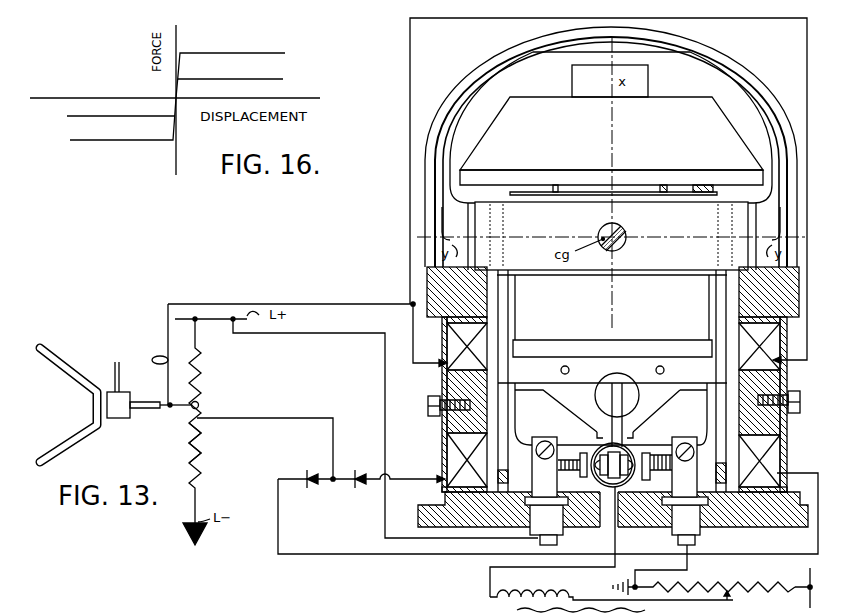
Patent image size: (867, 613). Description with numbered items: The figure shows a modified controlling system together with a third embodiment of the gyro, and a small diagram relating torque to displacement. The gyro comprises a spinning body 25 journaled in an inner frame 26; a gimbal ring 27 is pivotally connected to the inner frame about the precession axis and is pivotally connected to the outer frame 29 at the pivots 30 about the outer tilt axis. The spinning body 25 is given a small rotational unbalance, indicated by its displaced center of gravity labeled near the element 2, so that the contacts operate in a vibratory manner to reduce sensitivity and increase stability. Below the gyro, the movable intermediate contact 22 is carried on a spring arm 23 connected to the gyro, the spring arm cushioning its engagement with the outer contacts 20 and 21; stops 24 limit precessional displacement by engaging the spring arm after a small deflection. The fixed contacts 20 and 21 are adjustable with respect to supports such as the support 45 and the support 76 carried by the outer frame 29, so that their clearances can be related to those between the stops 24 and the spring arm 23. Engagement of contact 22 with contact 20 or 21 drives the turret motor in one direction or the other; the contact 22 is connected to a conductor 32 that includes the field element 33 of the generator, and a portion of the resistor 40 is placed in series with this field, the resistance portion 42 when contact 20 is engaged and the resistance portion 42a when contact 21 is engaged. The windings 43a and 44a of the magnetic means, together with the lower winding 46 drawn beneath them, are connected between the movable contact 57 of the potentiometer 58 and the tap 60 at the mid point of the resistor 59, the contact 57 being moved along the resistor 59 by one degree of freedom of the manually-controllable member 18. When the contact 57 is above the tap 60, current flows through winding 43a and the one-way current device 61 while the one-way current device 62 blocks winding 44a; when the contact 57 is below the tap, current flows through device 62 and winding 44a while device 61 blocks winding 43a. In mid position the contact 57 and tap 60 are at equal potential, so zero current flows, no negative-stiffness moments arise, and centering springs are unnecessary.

The manually-controllable member 18 is at (90, 440).
The movable contact 57 is at (198, 402).
The potentiometer 58 is at (235, 449).
The resistor 59 is at (192, 438).
The tap 60 is at (200, 418).
The one-way current device 61 is at (357, 472).
The one-way current device 62 is at (307, 472).
The outer frame 29 is at (462, 97).
The spinning body 25 is at (537, 107).
The pivotal connection 30 is at (475, 229).
The pendulum mass 2 is at (622, 240).
The gimbal ring 27 is at (672, 256).
The inner frame 26 is at (584, 346).
The spring arm 23 is at (617, 404).
The stops 24 is at (590, 432).
The winding 43a is at (452, 460).
The winding 44a is at (760, 335).
The right lower coil 46 is at (772, 455).
The left contact post 45 is at (520, 465).
The support 76 is at (693, 487).
The outer contact 20 is at (598, 473).
The outer contact 21 is at (633, 478).
The intermediate contact 22 is at (612, 480).
The conductor 32 is at (616, 540).
The field element 33 is at (495, 590).
The resistor 40 is at (723, 586).
The resistance portion 42 is at (698, 590).
The resistance portion 42a is at (762, 592).